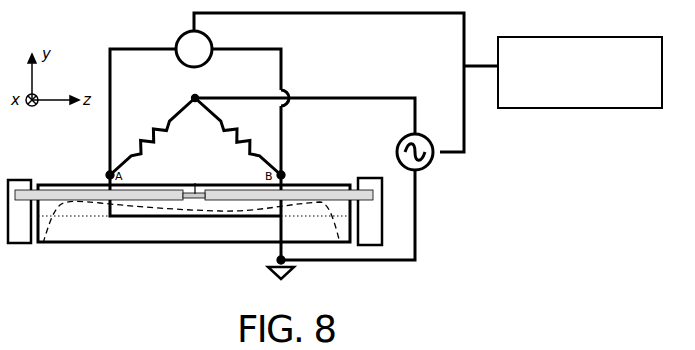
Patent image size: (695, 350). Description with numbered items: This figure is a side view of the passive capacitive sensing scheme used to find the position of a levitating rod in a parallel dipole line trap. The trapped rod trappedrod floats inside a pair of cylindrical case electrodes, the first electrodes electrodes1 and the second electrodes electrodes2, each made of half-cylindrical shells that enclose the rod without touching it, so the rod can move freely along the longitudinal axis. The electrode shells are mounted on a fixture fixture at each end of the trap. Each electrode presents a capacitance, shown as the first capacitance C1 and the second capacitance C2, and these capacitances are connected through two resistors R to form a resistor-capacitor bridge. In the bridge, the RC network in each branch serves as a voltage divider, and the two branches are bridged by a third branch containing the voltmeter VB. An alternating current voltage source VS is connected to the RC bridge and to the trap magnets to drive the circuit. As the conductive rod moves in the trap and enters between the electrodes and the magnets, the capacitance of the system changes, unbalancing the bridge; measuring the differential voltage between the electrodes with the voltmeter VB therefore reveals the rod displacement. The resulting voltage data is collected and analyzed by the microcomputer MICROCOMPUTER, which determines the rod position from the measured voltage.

The resistor R is at (195, 136).
The voltmeter VB is at (198, 47).
The alternating current voltage source VS is at (427, 158).
The microcomputer MICROCOMPUTER is at (580, 72).
The element fixture is at (20, 235).
The electrodes #1 electrodes1 is at (55, 193).
The electrodes #2 electrodes2 is at (337, 195).
The trapped rod trappedrod is at (190, 201).
The capacitance C1 is at (74, 172).
The capacitance C2 is at (301, 172).